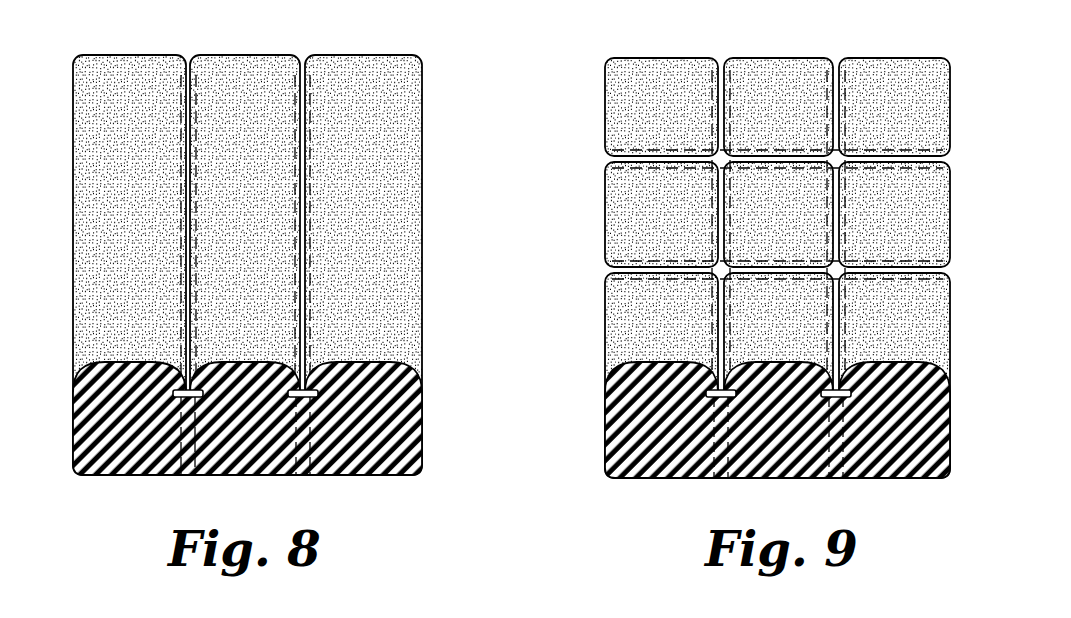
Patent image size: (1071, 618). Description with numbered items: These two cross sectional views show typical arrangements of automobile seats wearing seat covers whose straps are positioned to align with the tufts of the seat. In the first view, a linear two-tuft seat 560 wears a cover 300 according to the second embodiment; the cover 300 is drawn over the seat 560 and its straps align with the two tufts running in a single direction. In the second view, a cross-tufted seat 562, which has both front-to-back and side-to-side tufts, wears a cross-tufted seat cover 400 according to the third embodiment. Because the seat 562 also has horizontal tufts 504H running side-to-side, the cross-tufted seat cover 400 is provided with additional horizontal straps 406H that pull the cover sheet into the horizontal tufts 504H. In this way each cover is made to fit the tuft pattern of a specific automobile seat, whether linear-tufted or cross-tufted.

In FIG. 8, the cover 300 is at (364, 294).
In FIG. 8, the linear two-tuft seat 560 is at (142, 475).
In FIG. 9, the cross-tufted seat cover 400 is at (640, 326).
In FIG. 9, the horizontal tufts 504H is at (660, 156).
In FIG. 9, the horizontal straps 406H is at (890, 268).
In FIG. 9, the cross-tufted seat 562 is at (645, 480).